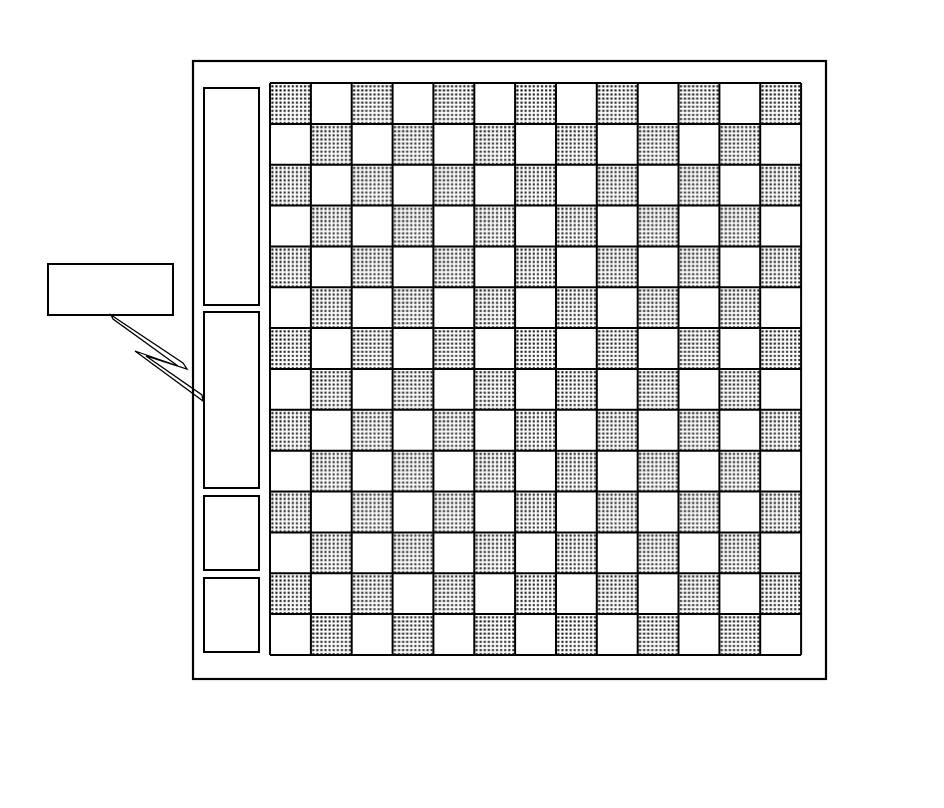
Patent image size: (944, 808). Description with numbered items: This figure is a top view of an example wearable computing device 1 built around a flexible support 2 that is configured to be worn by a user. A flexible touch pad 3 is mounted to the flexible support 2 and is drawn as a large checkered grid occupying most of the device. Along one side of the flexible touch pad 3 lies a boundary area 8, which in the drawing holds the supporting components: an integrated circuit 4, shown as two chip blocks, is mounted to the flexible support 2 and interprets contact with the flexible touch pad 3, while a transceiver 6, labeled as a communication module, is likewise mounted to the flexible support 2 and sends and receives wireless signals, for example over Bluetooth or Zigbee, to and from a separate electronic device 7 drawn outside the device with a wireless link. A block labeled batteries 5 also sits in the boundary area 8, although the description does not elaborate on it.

The wearable computing device 1 is at (752, 27).
The flexible support 2 is at (510, 61).
The flexible touch pad 3 is at (702, 228).
The integrated circuit 4 is at (204, 613).
The batteries 5 is at (231, 196).
The transceiver 6 is at (204, 440).
The separate electronic device 7 is at (110, 264).
The boundary area 8 is at (228, 73).